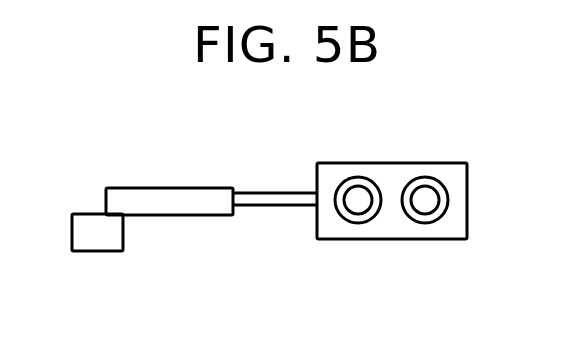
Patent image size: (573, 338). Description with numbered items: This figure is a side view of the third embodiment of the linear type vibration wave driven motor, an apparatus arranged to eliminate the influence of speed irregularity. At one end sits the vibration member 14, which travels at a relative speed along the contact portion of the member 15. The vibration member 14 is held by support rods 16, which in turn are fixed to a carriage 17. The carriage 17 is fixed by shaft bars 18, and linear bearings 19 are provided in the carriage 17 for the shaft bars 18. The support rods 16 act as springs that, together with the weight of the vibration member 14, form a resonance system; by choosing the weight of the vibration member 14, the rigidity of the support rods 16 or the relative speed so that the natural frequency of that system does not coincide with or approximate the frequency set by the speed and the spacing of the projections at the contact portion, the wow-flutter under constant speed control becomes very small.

The vibration member 14 is at (172, 189).
The member 15 is at (84, 220).
The support rods 16 is at (267, 192).
The carriage 17 is at (465, 163).
The shaft bars 18 is at (354, 203).
The linear bearings 19 is at (422, 183).